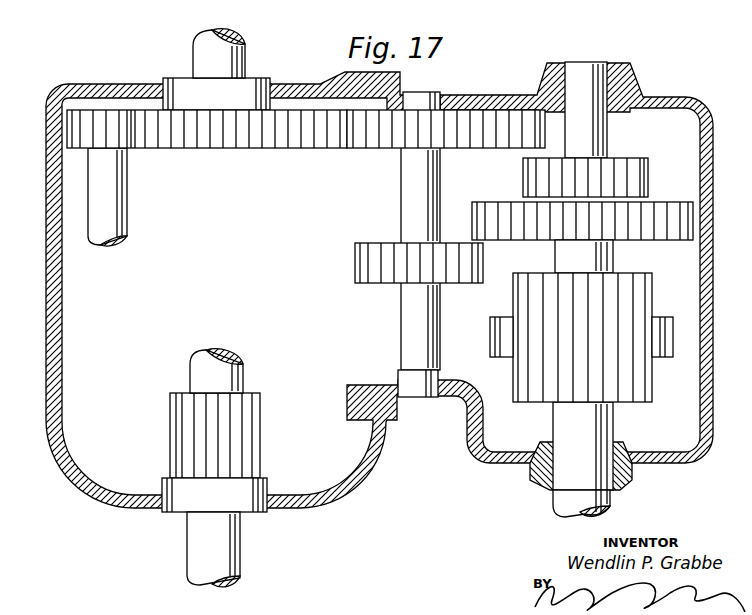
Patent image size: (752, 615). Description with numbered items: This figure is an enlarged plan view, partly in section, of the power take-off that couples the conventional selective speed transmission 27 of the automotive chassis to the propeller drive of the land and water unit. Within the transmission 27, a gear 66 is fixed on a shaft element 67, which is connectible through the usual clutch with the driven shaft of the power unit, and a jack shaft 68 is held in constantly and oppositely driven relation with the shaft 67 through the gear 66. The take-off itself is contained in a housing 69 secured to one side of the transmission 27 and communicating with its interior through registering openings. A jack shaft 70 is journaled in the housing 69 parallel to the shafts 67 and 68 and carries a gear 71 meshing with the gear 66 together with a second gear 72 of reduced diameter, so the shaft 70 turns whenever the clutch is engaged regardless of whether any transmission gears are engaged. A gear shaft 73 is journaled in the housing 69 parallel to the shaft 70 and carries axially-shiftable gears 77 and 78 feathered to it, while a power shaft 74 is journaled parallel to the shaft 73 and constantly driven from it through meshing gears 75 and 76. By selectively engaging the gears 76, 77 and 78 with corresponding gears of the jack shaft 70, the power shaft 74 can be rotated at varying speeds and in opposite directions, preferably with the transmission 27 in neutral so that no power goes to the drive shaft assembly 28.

The selective speed transmission 27 is at (55, 292).
The drive shaft assembly 28 is at (234, 558).
The gear 66 is at (217, 137).
The shaft element 67 is at (232, 54).
The jack shaft 68 is at (119, 214).
The housing 69 is at (708, 137).
The jack shaft 70 is at (418, 196).
The gear 71 is at (368, 137).
The second gear 72 is at (388, 274).
The gear shaft 73 is at (587, 425).
The power shaft 74 is at (610, 260).
The gear 75 is at (528, 377).
The gear 76 is at (505, 338).
The axially-shiftable gear 77 is at (490, 211).
The axially-shiftable gear 78 is at (533, 167).